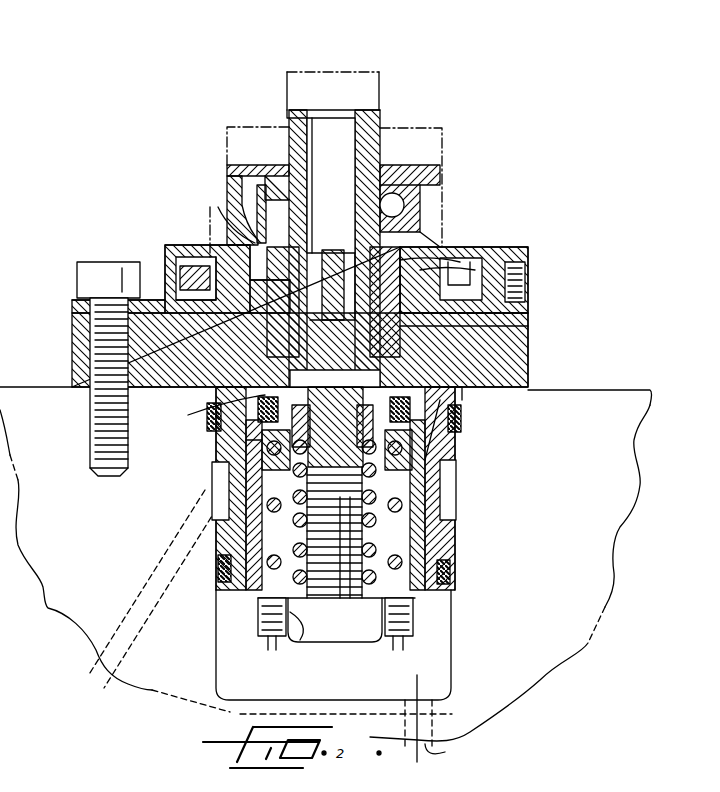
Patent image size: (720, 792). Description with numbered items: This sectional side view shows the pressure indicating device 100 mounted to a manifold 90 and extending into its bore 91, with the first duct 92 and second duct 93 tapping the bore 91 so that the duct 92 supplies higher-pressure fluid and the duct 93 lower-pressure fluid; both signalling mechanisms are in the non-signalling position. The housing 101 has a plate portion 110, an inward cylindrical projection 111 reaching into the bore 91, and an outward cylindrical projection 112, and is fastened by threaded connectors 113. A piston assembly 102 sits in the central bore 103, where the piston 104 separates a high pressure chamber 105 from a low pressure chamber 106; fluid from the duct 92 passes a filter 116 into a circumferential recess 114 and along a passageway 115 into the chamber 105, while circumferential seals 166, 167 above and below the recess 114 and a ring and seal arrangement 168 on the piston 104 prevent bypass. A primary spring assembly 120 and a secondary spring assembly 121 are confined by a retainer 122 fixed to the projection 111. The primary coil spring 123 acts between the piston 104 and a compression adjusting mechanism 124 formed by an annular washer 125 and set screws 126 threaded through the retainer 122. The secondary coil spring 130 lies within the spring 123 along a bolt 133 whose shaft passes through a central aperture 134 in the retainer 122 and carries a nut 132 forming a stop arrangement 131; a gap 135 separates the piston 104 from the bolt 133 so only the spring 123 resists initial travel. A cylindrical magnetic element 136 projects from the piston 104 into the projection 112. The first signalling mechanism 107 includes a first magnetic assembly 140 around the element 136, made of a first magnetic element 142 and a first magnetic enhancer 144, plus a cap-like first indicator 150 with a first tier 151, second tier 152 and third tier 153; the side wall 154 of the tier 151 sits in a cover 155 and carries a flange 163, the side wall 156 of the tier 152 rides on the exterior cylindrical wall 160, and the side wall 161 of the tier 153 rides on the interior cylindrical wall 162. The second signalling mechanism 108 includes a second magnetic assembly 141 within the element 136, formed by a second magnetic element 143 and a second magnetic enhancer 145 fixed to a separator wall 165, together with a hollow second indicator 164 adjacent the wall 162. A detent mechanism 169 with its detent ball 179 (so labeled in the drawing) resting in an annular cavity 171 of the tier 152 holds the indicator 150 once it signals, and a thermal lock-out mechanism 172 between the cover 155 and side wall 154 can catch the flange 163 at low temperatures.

The manifold 90 is at (590, 484).
The manifold bore 91 is at (452, 650).
The first duct 92 is at (92, 668).
The second duct 93 is at (445, 752).
The pressure indicating device 100 is at (500, 68).
The housing 101 is at (533, 370).
The piston assembly 102 is at (292, 516).
The central bore 103 is at (240, 460).
The piston 104 is at (332, 350).
The high pressure chamber 105 is at (291, 408).
The low pressure chamber 106 is at (240, 443).
The first signalling mechanism 107 is at (446, 190).
The second signalling mechanism 108 is at (311, 192).
The plate portion 110 is at (526, 318).
The inward cylindrical projection 111 is at (455, 450).
The outward cylindrical projection 112 is at (450, 246).
The threaded connectors 113 is at (85, 284).
The circumferential recess 114 is at (222, 485).
The passageway 115 is at (462, 400).
The filter 116 is at (456, 490).
The primary spring assembly 120 is at (266, 642).
The secondary spring assembly 121 is at (322, 652).
The retainer 122 is at (262, 612).
The primary coil spring 123 is at (374, 535).
The compression adjusting mechanism 124 is at (397, 640).
The annular washer 125 is at (400, 547).
The set screws 126 is at (272, 652).
The secondary coil spring 130 is at (360, 532).
The stop arrangement 131 is at (364, 413).
The nut 132 is at (300, 413).
The bolt 133 is at (345, 640).
The central aperture 134 is at (296, 642).
The gap 135 is at (335, 418).
The cylindrical magnetic element 136 is at (385, 302).
The first magnetic assembly 140 is at (148, 406).
The second magnetic assembly 141 is at (316, 232).
The first magnetic element 142 is at (485, 258).
The second magnetic element 143 is at (245, 222).
The first magnetic enhancer 144 is at (514, 303).
The second magnetic enhancer 145 is at (316, 252).
The first indicator 150 is at (318, 110).
The first tier 151 is at (250, 246).
The second tier 152 is at (240, 164).
The third tier 153 is at (290, 118).
The side wall of first tier 154 is at (170, 250).
The cover 155 is at (205, 250).
The side wall of second tier 156 is at (420, 232).
The exterior cylindrical wall 160 is at (432, 212).
The side wall of third tier 161 is at (395, 136).
The interior cylindrical wall 162 is at (382, 125).
The flange 163 is at (200, 275).
The second indicator 164 is at (310, 140).
The separator wall 165 is at (520, 340).
The circumferential seal 166 is at (462, 420).
The circumferential seal 167 is at (452, 574).
The circumferential ring and seal arrangement 168 is at (210, 412).
The detent mechanism 169 is at (395, 190).
The annular cavity 171 is at (435, 184).
The thermal lock-out mechanism 172 is at (490, 268).
The roller 179 is at (394, 205).